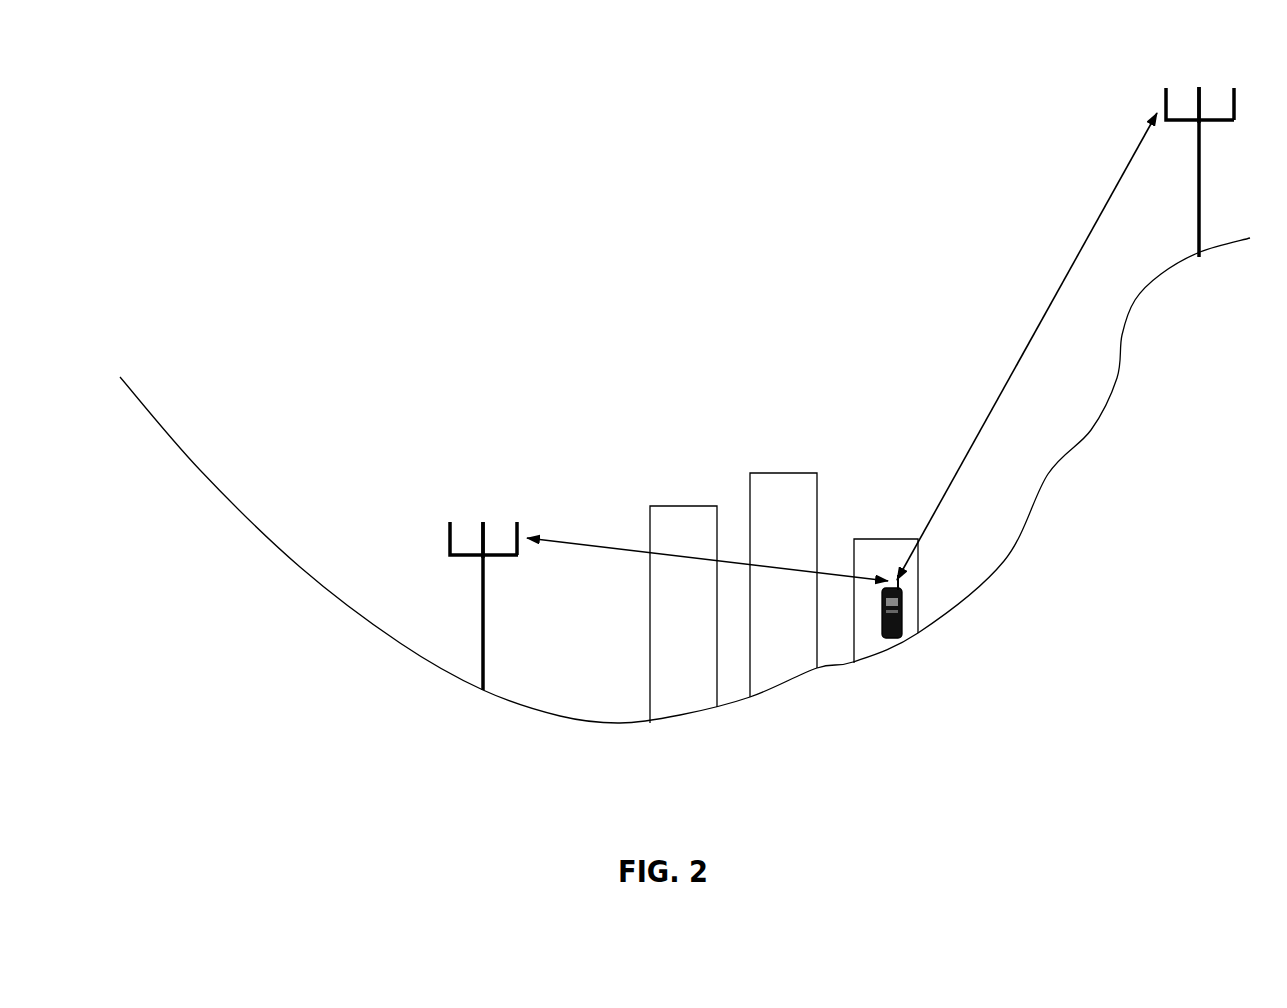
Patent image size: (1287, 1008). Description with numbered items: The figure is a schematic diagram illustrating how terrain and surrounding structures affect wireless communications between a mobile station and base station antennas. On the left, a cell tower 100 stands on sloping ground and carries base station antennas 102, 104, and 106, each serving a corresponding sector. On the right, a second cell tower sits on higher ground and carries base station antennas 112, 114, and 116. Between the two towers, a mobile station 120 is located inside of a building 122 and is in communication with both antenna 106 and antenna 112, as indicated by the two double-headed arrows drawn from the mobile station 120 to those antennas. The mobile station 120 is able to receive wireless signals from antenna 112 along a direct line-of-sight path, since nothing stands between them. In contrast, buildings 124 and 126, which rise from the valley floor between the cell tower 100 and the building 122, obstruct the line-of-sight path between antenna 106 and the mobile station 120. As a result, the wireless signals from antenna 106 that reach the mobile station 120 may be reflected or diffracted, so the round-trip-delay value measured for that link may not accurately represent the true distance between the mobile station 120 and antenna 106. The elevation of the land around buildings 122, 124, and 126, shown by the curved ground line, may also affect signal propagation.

The cell tower 100 is at (483, 655).
The base station antenna 102 is at (450, 540).
The base station antenna 104 is at (483, 520).
The base station antenna 106 is at (518, 520).
The base station antenna 112 is at (1166, 86).
The base station antenna 114 is at (1202, 86).
The base station antenna 116 is at (1237, 103).
The mobile station 120 is at (893, 640).
The building 122 is at (918, 600).
The building 124 is at (785, 472).
The building 126 is at (650, 622).